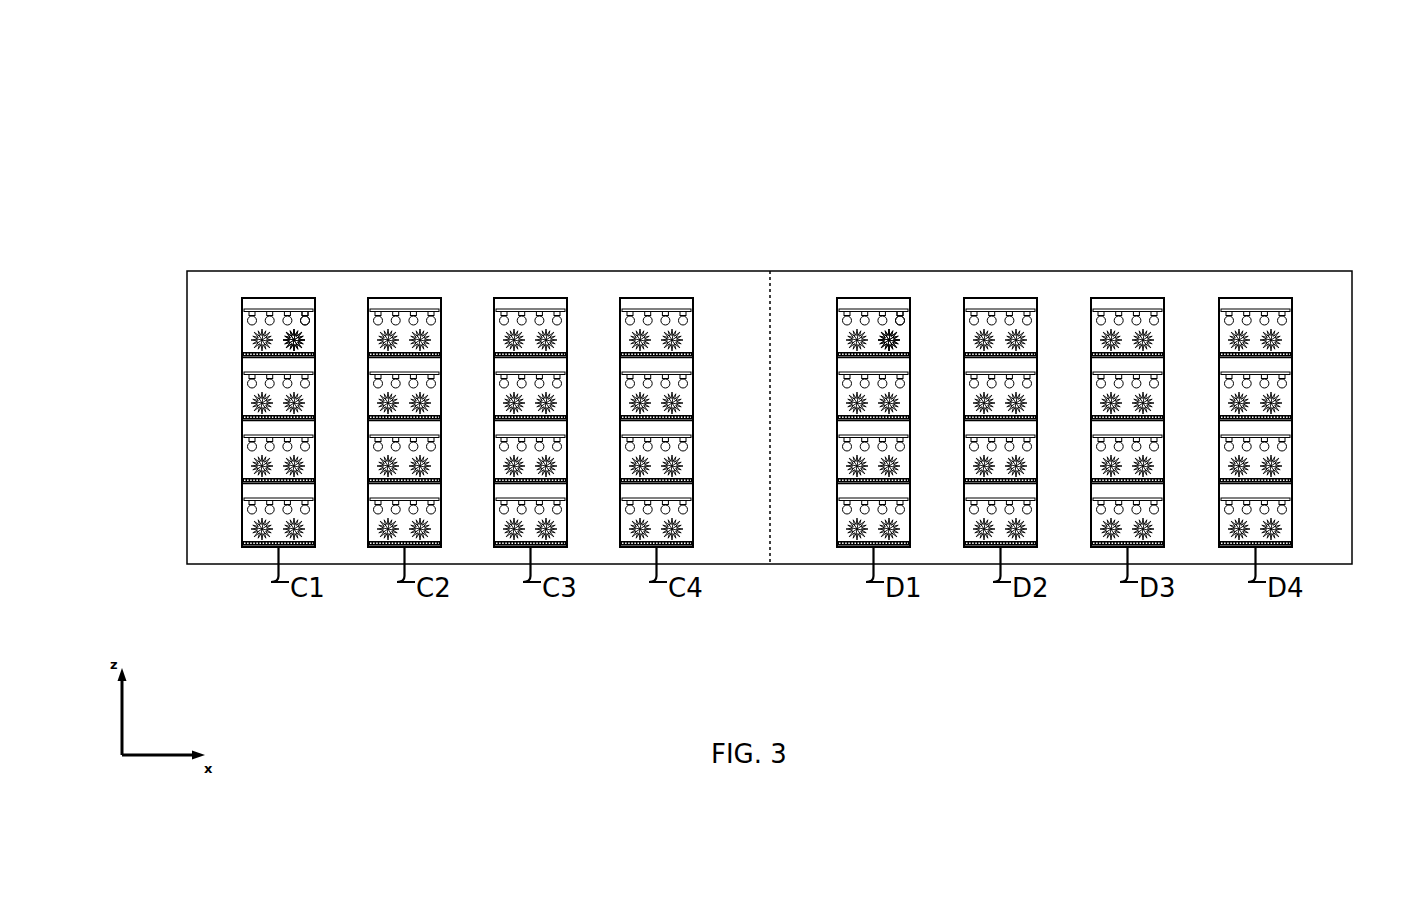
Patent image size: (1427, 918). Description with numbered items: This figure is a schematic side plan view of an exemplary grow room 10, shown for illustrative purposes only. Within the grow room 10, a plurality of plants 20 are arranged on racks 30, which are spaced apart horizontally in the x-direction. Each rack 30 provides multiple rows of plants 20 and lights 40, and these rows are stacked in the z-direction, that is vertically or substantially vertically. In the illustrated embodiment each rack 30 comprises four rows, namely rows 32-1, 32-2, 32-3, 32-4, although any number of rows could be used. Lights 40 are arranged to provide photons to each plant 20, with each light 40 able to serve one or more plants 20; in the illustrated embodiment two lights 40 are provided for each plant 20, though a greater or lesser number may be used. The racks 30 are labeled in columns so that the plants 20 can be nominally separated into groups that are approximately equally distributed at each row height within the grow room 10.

The grow room 10 is at (183, 149).
The plant 20 is at (295, 340).
The rack 30 is at (257, 276).
The light 40 is at (303, 321).
The row 32-1 is at (224, 525).
The row 32-2 is at (224, 461).
The row 32-3 is at (224, 398).
The row 32-4 is at (224, 331).